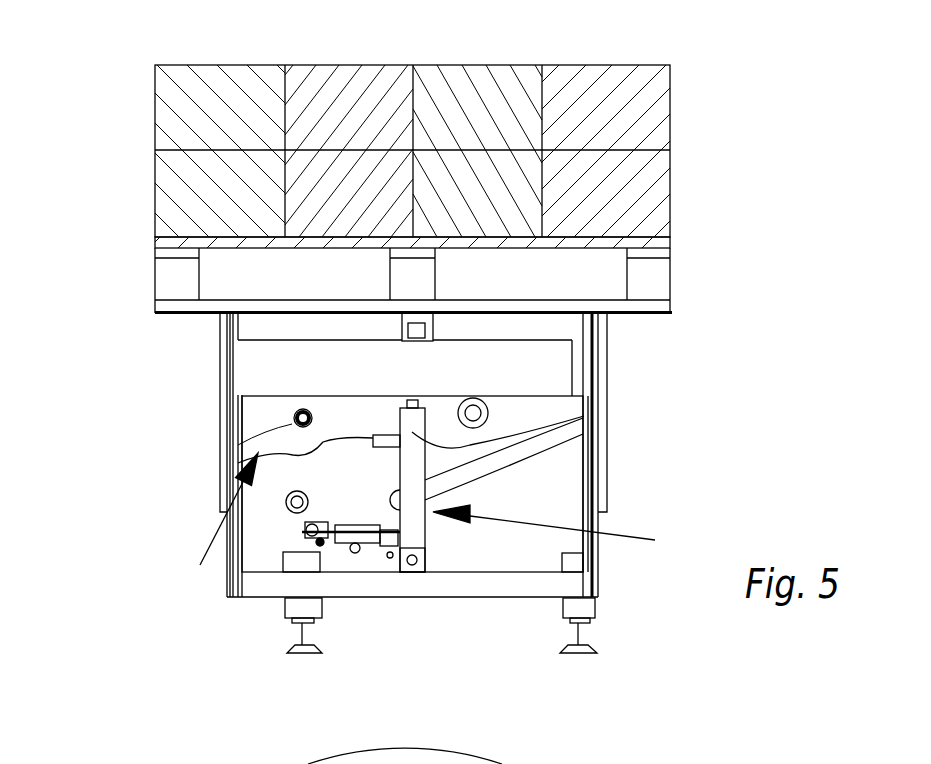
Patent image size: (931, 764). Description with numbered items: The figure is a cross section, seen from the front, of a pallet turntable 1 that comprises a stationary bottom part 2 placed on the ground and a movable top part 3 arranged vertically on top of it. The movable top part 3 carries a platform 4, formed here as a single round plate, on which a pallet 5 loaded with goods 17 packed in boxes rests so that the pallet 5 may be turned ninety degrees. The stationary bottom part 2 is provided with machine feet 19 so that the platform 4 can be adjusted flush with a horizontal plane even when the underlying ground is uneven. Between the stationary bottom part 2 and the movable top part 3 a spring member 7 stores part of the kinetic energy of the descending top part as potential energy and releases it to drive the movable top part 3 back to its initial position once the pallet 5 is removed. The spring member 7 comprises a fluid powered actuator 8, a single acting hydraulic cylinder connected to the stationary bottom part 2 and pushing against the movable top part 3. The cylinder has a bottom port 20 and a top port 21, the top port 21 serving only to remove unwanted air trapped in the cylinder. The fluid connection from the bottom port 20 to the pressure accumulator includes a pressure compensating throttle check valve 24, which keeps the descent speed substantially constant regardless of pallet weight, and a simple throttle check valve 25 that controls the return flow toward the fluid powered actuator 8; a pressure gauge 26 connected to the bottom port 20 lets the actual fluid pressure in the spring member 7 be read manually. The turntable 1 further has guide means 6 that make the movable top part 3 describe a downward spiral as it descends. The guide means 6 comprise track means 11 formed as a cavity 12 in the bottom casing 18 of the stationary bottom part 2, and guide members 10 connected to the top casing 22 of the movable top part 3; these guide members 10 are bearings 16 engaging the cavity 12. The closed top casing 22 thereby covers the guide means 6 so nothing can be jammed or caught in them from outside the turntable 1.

The pallet turntable 1 is at (96, 50).
The stationary bottom part 2 is at (642, 619).
The movable top part 3 is at (659, 455).
The platform 4 is at (637, 315).
The pallet 5 is at (650, 272).
The guide means 6 is at (221, 524).
The spring member 7 is at (555, 534).
The fluid powered actuator 8 is at (500, 441).
The guide members 10 is at (191, 427).
The track means 11 is at (565, 467).
The cavity 12 is at (528, 465).
The bearings 16 is at (297, 423).
The goods 17 is at (620, 108).
The bottom casing 18 is at (590, 566).
The machine feet 19 is at (577, 653).
The bottom port 20 is at (395, 540).
The top port 21 is at (238, 463).
The top casing 22 is at (598, 378).
The pressure compensating throttle check valve 24 is at (360, 547).
The throttle check valve 25 is at (318, 550).
The pressure gauge 26 is at (305, 550).